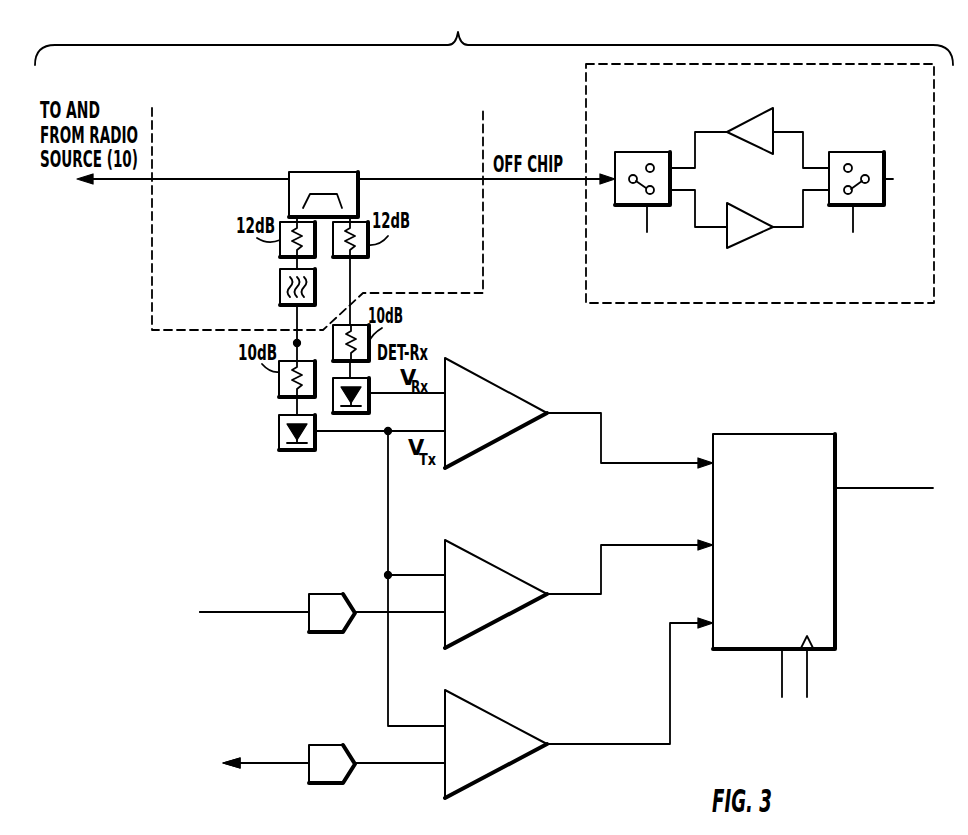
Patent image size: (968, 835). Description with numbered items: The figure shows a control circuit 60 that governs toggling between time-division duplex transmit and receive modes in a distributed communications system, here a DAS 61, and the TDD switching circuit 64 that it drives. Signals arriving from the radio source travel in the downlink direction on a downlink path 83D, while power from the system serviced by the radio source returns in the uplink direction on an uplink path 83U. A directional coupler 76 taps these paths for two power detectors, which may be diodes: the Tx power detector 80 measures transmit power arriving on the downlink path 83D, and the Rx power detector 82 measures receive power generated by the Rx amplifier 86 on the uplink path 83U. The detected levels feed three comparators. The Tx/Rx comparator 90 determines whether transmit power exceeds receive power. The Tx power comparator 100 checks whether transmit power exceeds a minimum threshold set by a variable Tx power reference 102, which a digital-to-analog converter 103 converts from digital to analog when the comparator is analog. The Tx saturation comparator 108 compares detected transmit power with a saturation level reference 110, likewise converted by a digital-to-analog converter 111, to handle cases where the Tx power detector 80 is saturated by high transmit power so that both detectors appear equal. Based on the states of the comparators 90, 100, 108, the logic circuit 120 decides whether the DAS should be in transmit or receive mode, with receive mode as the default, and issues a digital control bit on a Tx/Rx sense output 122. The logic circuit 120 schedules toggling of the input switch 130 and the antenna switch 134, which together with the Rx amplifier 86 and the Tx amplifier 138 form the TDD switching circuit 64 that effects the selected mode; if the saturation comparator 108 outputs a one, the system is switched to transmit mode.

The DAS 61 is at (494, 32).
The control circuit 60 is at (133, 356).
The directional coupler 76 is at (297, 172).
The Tx power detector 80 is at (279, 432).
The Rx power detector 82 is at (369, 404).
The downlink path 83D is at (430, 160).
The uplink path 83U is at (430, 160).
The Tx/Rx comparator 90 is at (485, 424).
The Tx power comparator 100 is at (488, 606).
The Tx power reference 102 is at (268, 613).
The digital-to-analog converter 103 is at (325, 594).
The Tx saturation comparator 108 is at (493, 756).
The saturation level reference 110 is at (285, 765).
The digital-to-analog converter 111 is at (325, 745).
The logic circuit 120 is at (790, 552).
The Tx/Rx sense output 122 is at (879, 488).
The input switch 130 is at (636, 207).
The antenna switch 134 is at (873, 207).
The Rx amplifier 86 is at (758, 149).
The Tx amplifier 138 is at (748, 216).
The TDD switching circuit 64 is at (922, 294).